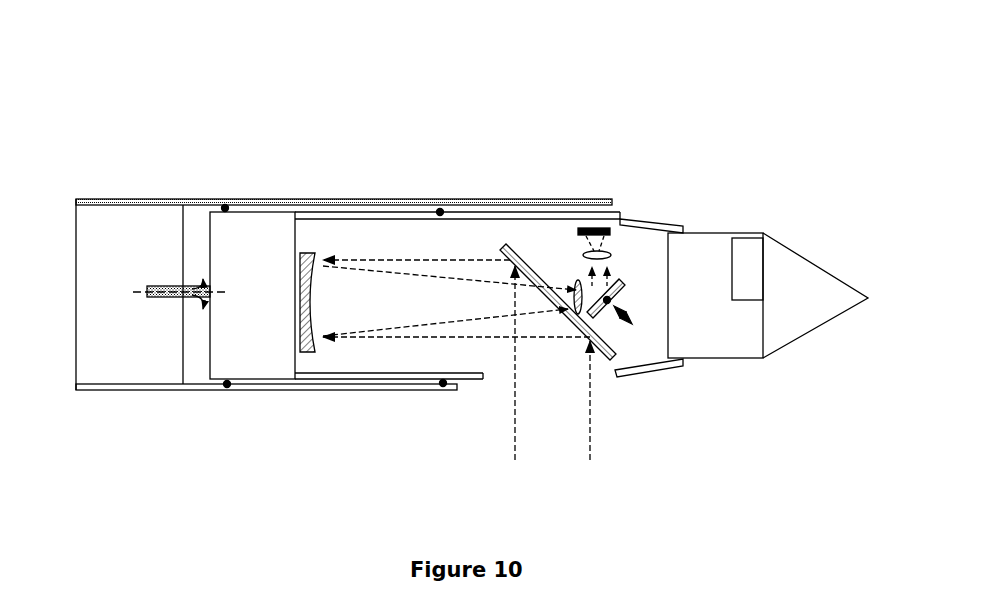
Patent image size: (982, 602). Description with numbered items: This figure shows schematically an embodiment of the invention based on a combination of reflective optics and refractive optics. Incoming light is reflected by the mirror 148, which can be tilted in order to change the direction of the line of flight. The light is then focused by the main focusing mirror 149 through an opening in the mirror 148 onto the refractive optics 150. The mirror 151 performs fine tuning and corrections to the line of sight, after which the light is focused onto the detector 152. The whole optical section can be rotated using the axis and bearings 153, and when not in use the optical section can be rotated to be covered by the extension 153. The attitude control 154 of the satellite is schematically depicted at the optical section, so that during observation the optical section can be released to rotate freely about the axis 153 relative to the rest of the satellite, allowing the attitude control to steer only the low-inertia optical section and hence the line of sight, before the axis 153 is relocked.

The mirror 148 is at (503, 246).
The mirror 149 is at (306, 247).
The refractive optics 150 is at (579, 274).
The mirror 151 is at (627, 325).
The detector 152 is at (621, 222).
The axis and bearings 153 is at (590, 198).
The attitude control 154 is at (751, 232).